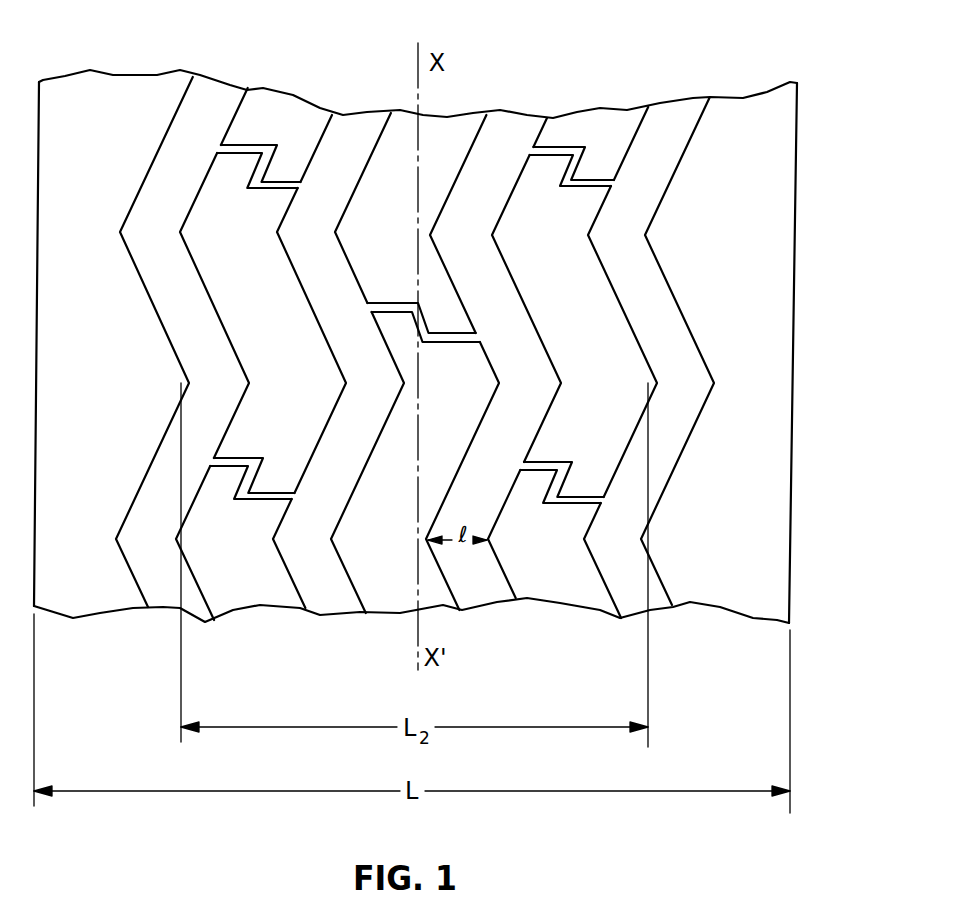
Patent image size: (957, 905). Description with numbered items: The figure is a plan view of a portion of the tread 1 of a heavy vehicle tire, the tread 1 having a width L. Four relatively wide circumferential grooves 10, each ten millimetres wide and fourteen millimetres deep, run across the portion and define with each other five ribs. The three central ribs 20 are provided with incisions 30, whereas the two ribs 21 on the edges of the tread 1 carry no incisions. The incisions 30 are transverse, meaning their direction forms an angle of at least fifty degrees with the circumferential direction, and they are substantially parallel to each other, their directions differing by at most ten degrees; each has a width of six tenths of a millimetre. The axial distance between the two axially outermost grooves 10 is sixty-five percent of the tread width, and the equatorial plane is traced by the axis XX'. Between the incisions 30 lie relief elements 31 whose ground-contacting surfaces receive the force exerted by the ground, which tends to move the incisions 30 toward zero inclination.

The tread 1 is at (760, 115).
The circumferential grooves 10 is at (218, 92).
The central ribs 20 is at (282, 326).
The edge ribs 21 is at (93, 88).
The incisions 30 is at (257, 143).
The relief elements 31 is at (455, 130).